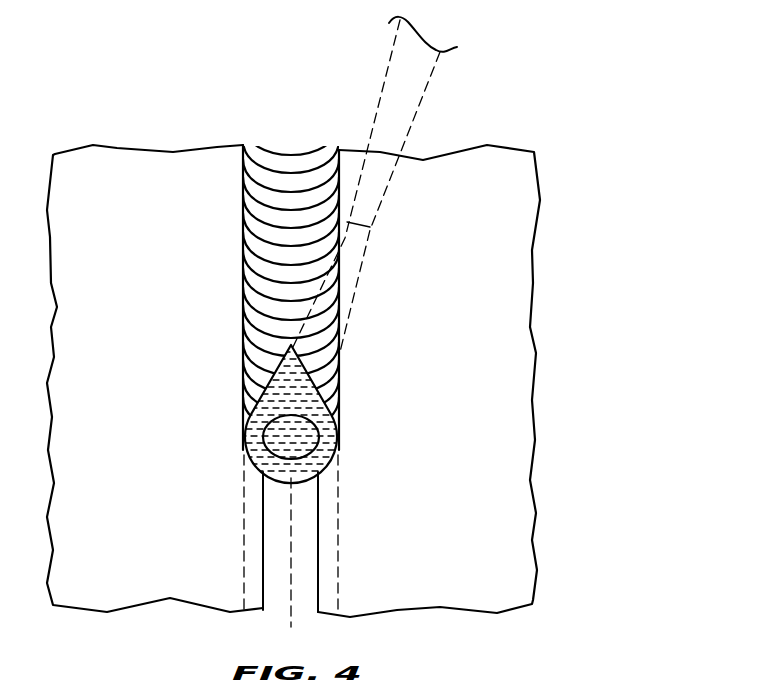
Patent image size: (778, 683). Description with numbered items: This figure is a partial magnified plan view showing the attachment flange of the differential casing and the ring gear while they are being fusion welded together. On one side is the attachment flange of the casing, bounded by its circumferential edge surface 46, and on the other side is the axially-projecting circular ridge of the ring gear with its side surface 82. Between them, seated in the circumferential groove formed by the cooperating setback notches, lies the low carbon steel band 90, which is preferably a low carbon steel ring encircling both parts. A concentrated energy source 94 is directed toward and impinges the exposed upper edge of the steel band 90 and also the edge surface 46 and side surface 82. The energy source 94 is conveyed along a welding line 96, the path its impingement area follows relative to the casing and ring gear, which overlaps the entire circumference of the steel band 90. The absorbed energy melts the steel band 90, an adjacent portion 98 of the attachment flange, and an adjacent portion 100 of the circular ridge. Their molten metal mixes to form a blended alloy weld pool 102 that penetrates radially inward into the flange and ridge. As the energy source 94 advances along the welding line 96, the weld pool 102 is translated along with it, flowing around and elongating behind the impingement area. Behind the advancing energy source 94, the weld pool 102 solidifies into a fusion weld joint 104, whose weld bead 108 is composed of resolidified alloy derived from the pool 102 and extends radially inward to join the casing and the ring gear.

The circumferential edge surface 46 is at (163, 387).
The side surface 82 is at (479, 386).
The fusion weld joint 104 is at (291, 216).
The weld bead 108 is at (278, 302).
The concentrated energy source 94 is at (357, 247).
The blended alloy weld pool 102 is at (340, 446).
The welding line 96 is at (292, 505).
The adjacent portion of the attachment flange 98 is at (253, 547).
The adjacent portion of the axially-projecting circular ridge 100 is at (328, 557).
The low carbon steel band 90 is at (301, 546).